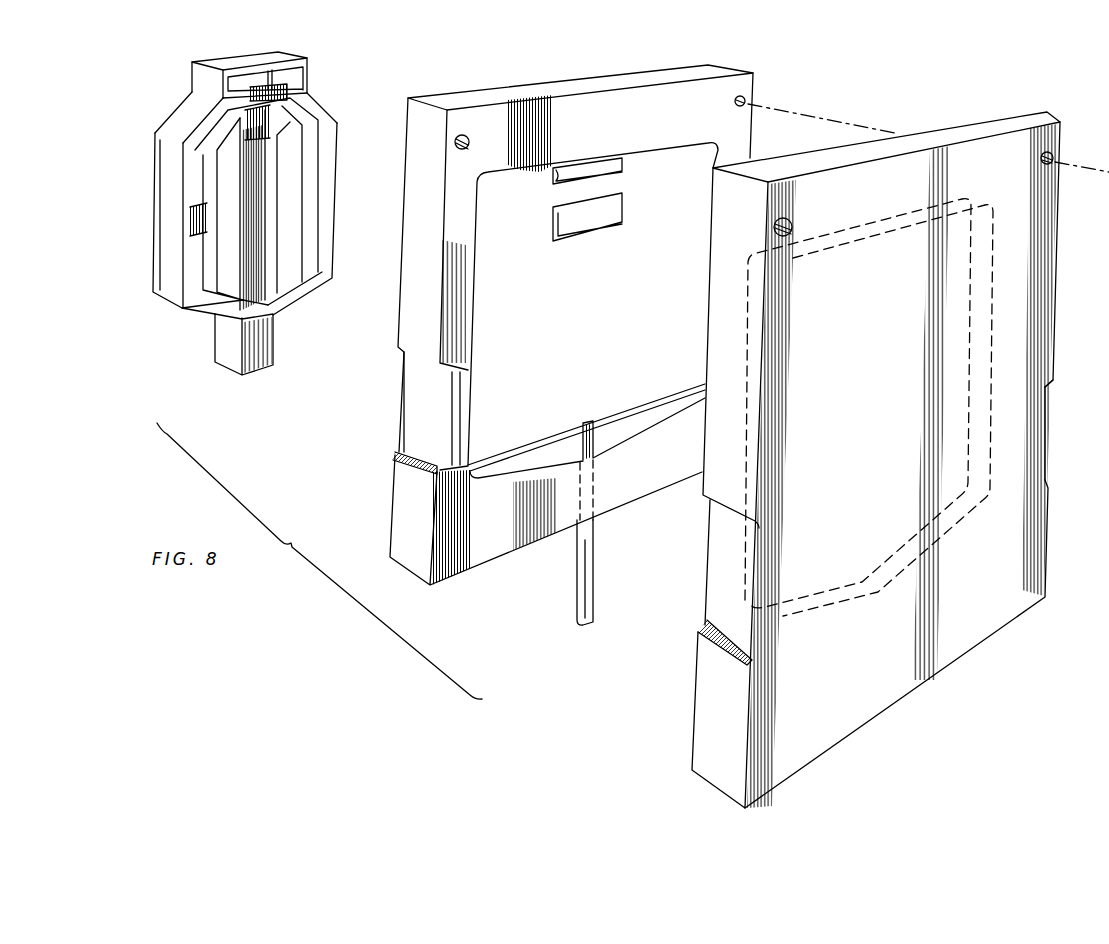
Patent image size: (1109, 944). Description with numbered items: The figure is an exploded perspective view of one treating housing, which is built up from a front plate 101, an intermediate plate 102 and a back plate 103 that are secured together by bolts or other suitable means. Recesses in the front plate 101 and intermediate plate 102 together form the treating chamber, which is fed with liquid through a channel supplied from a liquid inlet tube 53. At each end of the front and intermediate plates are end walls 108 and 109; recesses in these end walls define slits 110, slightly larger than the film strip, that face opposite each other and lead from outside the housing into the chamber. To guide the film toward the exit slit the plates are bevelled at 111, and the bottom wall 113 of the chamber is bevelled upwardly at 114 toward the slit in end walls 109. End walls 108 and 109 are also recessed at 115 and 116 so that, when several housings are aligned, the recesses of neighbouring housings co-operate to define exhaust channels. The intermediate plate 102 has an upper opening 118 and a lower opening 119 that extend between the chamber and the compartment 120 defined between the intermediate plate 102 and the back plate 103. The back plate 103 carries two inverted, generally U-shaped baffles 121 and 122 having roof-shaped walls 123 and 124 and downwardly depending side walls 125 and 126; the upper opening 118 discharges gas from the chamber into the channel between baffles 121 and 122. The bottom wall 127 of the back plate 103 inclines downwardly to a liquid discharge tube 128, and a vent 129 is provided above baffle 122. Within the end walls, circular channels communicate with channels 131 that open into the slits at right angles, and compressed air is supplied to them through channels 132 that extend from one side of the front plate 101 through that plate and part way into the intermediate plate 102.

The liquid inlet tube 53 is at (586, 592).
The front plate 101 is at (1062, 302).
The intermediate plate 102 is at (560, 74).
The back plate 103 is at (312, 66).
The end wall 108 is at (417, 310).
The end wall 109 is at (767, 140).
The slit 110 is at (462, 397).
The bevelled surface 111 is at (637, 280).
The bottom wall 113 is at (600, 462).
The bevel 114 is at (653, 420).
The recess 115 is at (415, 408).
The recess 116 is at (1046, 455).
The upper opening 118 is at (577, 170).
The lower opening 119 is at (580, 220).
The compartment 120 is at (202, 182).
The baffle 121 is at (227, 290).
The baffle 122 is at (292, 165).
The roof-shaped wall 123 is at (251, 133).
The roof-shaped wall 124 is at (249, 98).
The side wall 125 is at (270, 210).
The side wall 126 is at (293, 240).
The bottom wall 127 is at (300, 283).
The liquid discharge tube 128 is at (227, 350).
The vent 129 is at (245, 80).
The channel 131 is at (452, 425).
The channel 132 is at (744, 99).